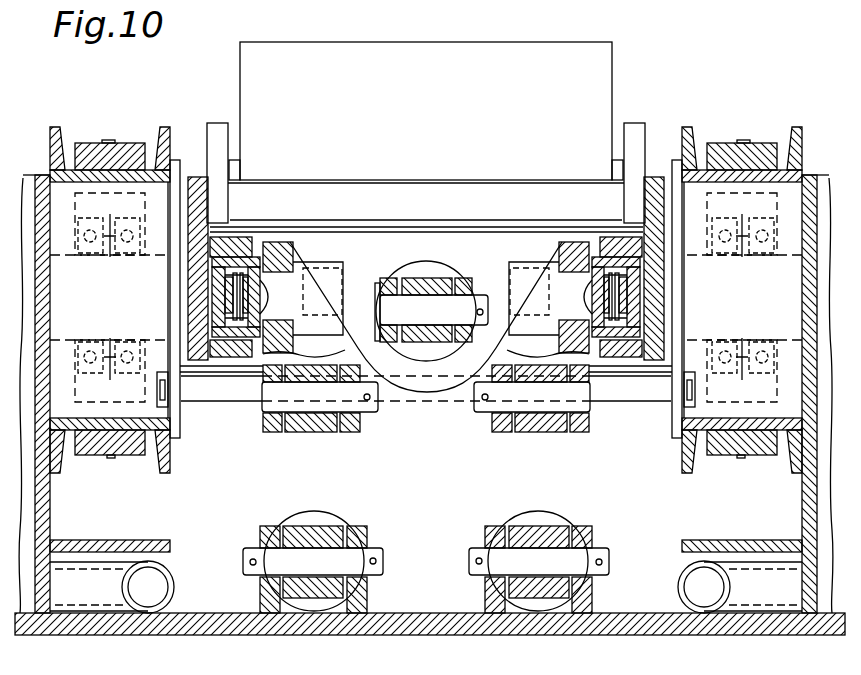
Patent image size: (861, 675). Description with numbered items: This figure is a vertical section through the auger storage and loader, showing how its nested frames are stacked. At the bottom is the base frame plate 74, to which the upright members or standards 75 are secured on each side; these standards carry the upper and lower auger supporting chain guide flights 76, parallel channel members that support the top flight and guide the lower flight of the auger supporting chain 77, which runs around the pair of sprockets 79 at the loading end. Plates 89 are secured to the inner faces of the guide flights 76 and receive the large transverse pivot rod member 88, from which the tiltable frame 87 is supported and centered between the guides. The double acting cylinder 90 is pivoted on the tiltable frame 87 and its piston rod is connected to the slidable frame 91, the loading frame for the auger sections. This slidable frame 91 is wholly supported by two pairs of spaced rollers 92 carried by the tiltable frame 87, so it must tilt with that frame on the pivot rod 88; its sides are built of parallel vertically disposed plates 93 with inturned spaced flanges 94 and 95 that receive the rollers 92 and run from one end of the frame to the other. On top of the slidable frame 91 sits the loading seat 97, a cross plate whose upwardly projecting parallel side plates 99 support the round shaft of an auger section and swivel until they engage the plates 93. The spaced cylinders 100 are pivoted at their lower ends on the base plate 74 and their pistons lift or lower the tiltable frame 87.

The base frame plate 74 is at (218, 625).
The upright members or standards 75 is at (45, 508).
The auger supporting chain guide flights 76 is at (50, 147).
The auger supporting chain 77 is at (86, 148).
The sprockets 79 is at (110, 140).
The tiltable frame 87 is at (292, 256).
The transverse pivot rod member 88 is at (198, 388).
The plates 89 is at (172, 268).
The double acting cylinder 90 is at (428, 282).
The slidable frame 91 is at (197, 180).
The rollers 92 is at (223, 332).
The plates 93 is at (193, 293).
The inturned flange 94 is at (245, 245).
The inturned flange 95 is at (233, 353).
The loading seat 97 is at (291, 52).
The parallel side plates 99 is at (455, 55).
The spaced cylinders 100 is at (316, 425).